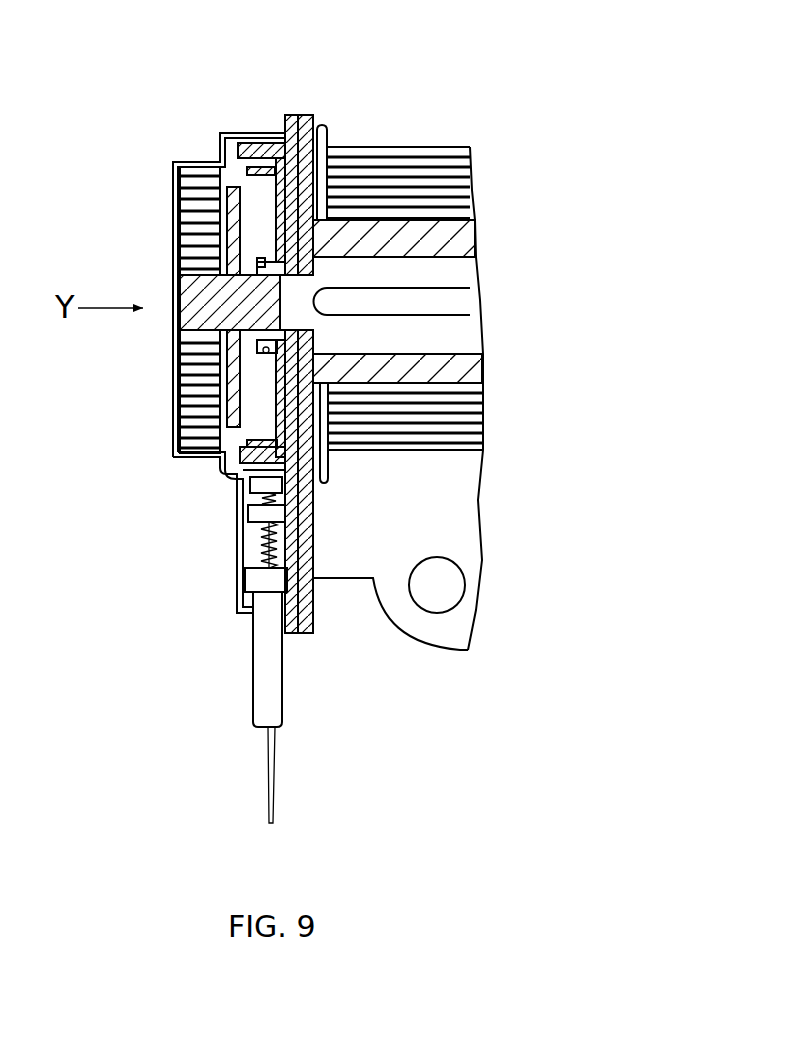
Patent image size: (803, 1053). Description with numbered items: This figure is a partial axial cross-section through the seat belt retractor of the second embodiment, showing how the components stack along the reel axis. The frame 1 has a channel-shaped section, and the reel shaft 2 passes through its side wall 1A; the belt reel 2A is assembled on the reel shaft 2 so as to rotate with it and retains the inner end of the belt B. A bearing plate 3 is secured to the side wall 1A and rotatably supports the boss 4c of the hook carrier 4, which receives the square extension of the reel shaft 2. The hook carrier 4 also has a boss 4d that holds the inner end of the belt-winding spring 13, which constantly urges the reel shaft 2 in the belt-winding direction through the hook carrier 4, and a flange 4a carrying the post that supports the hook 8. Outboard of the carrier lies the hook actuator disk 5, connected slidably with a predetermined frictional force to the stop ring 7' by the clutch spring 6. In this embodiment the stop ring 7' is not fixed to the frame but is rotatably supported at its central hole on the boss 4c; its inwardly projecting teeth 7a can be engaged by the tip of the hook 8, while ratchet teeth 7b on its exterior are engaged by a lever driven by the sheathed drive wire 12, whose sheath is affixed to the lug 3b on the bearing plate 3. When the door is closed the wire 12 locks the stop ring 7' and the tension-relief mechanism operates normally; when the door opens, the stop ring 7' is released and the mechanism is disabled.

The frame 1 is at (397, 553).
The side wall 1A is at (313, 127).
The reel shaft 2 is at (457, 265).
The belt reel 2A is at (328, 137).
The bearing plate 3 is at (295, 115).
The lug 3b is at (255, 582).
The hook carrier 4 is at (177, 272).
The flange 4a is at (228, 405).
The boss 4c is at (397, 253).
The boss 4d is at (187, 320).
The hook actuator disk 5 is at (272, 198).
The clutch spring 6 is at (203, 208).
The stop ring 7' is at (262, 141).
The teeth 7a is at (232, 478).
The ratchet teeth 7b is at (253, 465).
The hook 8 is at (253, 423).
The sheathed drive wire 12 is at (275, 765).
The belt-winding spring 13 is at (195, 377).
The belt B is at (447, 150).